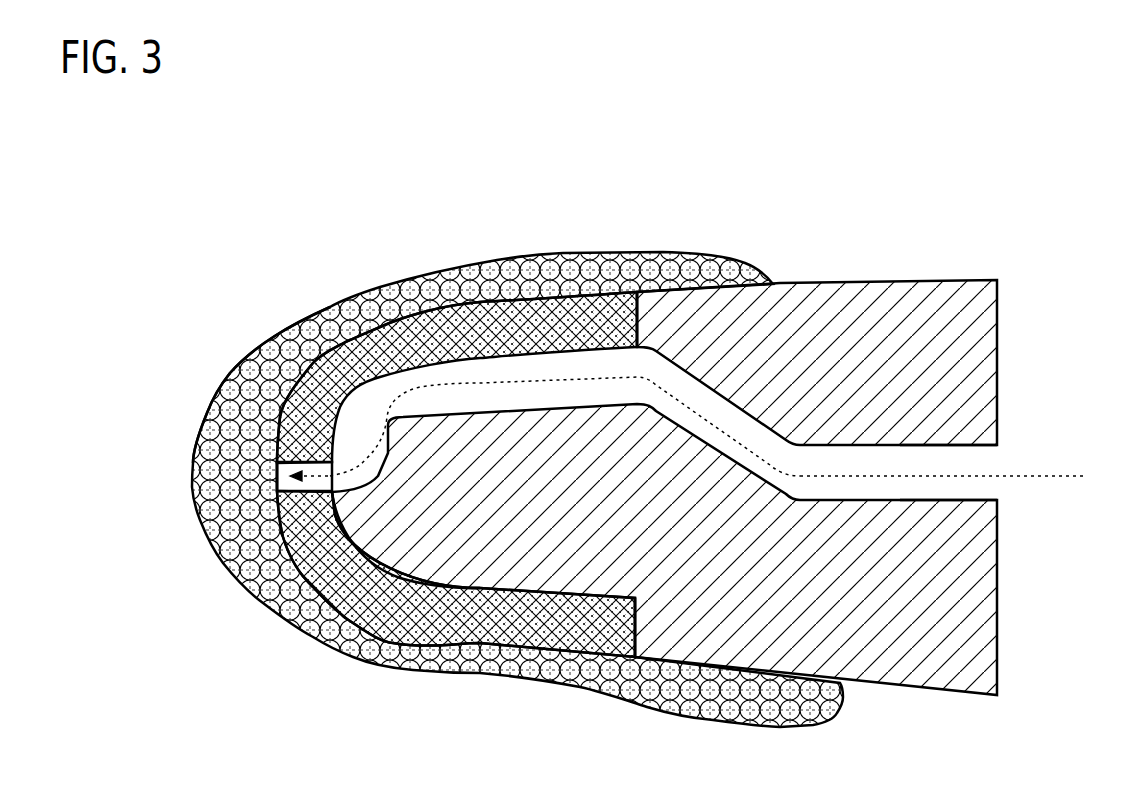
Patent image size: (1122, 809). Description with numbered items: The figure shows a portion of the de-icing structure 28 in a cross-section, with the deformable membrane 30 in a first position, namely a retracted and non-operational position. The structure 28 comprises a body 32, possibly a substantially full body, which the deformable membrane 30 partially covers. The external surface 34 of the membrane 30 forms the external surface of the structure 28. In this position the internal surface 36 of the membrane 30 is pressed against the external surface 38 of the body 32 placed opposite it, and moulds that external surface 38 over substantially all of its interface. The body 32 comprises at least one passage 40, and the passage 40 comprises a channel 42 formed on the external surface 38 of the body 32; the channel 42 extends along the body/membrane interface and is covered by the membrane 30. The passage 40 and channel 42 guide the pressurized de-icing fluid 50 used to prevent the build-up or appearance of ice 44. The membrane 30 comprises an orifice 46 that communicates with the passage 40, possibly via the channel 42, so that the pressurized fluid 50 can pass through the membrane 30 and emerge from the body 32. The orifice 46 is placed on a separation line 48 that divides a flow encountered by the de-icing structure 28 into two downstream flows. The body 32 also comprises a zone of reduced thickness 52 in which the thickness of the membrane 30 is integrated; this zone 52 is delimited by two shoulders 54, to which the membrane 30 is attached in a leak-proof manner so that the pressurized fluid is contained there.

The de-icing structure 28 is at (300, 172).
The deformable membrane 30 is at (390, 307).
The body 32 is at (740, 564).
The external surface of the membrane 34 is at (495, 270).
The internal surface of the membrane 36 is at (552, 622).
The external surface of the body 38 is at (445, 590).
The passage 40 is at (965, 463).
The channel 42 is at (505, 406).
The ice 44 is at (230, 372).
The orifice 46 is at (268, 485).
The separation line 48 is at (275, 485).
The pressurized de-icing fluid 50 is at (1050, 477).
The zone of reduced thickness 52 is at (504, 519).
The shoulder 54 is at (623, 310).